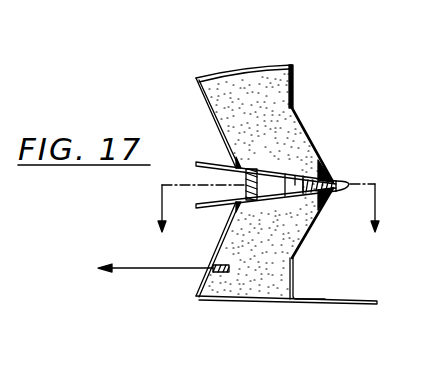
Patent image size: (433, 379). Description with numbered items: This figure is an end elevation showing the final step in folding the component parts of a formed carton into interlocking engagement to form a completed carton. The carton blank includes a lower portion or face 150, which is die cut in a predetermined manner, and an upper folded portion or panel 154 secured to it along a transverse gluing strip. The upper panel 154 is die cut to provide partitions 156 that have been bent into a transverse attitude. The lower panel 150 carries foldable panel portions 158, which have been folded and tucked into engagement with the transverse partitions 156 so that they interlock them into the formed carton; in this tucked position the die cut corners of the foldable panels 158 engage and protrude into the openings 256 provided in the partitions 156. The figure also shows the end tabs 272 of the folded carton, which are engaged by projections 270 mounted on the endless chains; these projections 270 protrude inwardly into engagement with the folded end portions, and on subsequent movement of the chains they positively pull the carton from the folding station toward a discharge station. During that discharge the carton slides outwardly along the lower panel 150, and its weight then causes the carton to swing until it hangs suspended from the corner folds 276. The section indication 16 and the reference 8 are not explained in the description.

The upper folded portion or panel 154 is at (228, 66).
The partitions 156 is at (267, 85).
The rear wall 8 is at (294, 92).
The foldable panel portions 158 is at (338, 180).
The openings 256 is at (295, 178).
The end tabs 272 is at (220, 240).
The projections 270 is at (236, 262).
The corner folds 276 is at (196, 297).
The lower portion or face 150 is at (243, 304).
The section line 16- 16 is at (272, 226).